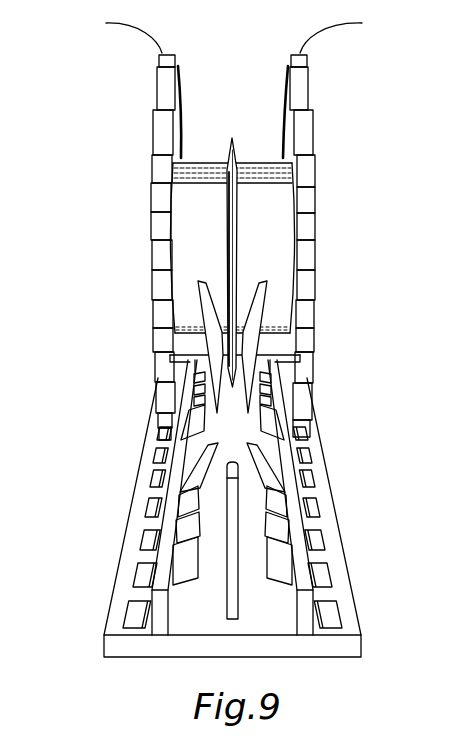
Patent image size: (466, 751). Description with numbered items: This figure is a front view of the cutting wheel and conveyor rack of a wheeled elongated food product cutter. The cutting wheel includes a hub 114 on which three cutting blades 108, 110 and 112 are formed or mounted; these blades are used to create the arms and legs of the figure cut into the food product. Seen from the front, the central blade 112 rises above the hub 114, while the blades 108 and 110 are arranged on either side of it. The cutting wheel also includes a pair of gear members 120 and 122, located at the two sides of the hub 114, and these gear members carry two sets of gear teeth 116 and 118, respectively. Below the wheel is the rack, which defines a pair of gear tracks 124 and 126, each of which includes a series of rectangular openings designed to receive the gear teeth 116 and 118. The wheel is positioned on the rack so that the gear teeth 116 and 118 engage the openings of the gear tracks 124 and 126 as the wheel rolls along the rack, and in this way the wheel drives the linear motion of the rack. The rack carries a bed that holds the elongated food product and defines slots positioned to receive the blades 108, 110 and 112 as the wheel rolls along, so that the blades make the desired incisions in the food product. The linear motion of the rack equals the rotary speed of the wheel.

The cutting blade 108 is at (215, 350).
The cutting blade 110 is at (250, 350).
The cutting blade 112 is at (237, 230).
The hub 114 is at (254, 165).
The gear teeth 116 is at (110, 35).
The gear teeth 118 is at (349, 35).
The gear member 120 is at (146, 118).
The gear member 122 is at (320, 122).
The gear track 124 is at (115, 550).
The gear track 126 is at (350, 550).